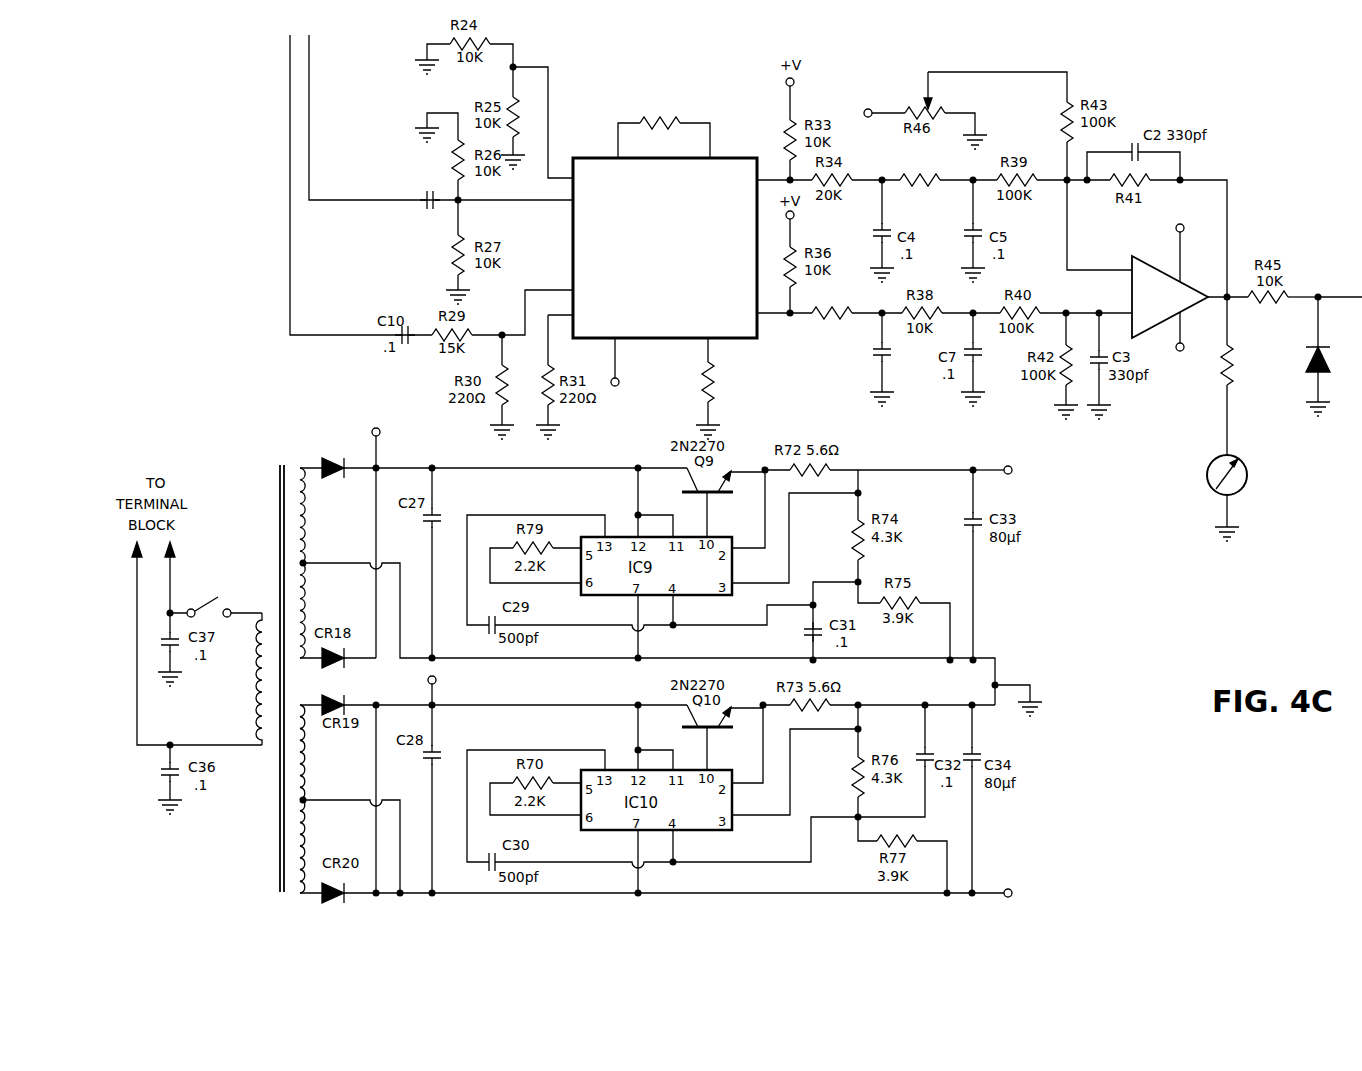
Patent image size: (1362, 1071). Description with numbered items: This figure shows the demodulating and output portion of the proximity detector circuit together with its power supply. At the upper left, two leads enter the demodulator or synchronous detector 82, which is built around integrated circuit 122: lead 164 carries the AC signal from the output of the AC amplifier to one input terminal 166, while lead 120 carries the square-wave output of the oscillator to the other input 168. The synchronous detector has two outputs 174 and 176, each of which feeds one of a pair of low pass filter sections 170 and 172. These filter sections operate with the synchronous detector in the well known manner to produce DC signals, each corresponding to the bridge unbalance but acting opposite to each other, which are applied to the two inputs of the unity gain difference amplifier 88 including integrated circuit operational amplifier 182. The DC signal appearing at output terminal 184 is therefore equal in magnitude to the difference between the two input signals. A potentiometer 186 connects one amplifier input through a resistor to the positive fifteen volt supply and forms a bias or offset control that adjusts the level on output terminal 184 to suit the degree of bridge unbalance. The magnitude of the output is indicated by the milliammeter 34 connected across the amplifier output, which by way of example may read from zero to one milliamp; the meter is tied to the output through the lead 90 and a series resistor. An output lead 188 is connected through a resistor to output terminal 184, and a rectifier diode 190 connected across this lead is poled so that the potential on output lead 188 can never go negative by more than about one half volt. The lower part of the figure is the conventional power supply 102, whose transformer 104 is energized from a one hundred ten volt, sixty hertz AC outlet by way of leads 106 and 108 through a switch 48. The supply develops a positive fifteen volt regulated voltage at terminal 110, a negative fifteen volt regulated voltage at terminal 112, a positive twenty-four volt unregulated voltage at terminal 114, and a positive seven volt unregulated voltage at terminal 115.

The lead 120 is at (290, 72).
The lead 164 is at (309, 92).
The demodulator 82 is at (663, 257).
The integrated circuit 122 is at (712, 195).
The output 174 is at (760, 178).
The input terminal 166 is at (573, 205).
The input 168 is at (573, 290).
The output 176 is at (759, 316).
The low pass filter section 170 is at (880, 178).
The low pass filter section 172 is at (863, 339).
The integrated circuit operational amplifier 182 is at (1146, 268).
The output terminal 184 is at (1128, 273).
The potentiometer 186 is at (1130, 315).
The unity gain difference amplifier 88 is at (1233, 192).
The output lead 188 is at (1320, 292).
The rectifier diode 190 is at (1310, 371).
The meter lead 90 is at (1230, 376).
The milliammeter 34 is at (1208, 468).
The transformer 104 is at (283, 466).
The lead 108 is at (137, 585).
The lead 106 is at (170, 587).
The power switch 48 is at (220, 598).
The terminal 114 is at (390, 532).
The power supply 102 is at (493, 462).
The terminal 115 is at (436, 682).
The terminal 110 is at (1008, 465).
The terminal 112 is at (1008, 884).